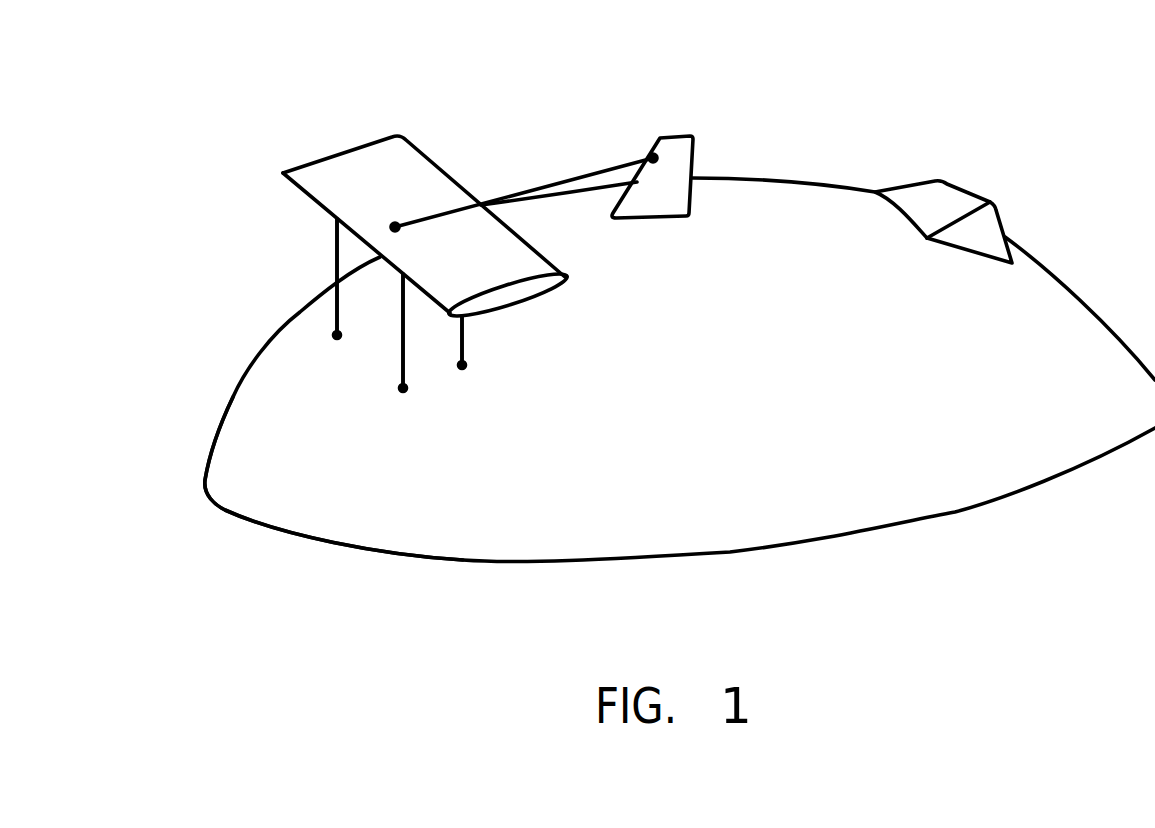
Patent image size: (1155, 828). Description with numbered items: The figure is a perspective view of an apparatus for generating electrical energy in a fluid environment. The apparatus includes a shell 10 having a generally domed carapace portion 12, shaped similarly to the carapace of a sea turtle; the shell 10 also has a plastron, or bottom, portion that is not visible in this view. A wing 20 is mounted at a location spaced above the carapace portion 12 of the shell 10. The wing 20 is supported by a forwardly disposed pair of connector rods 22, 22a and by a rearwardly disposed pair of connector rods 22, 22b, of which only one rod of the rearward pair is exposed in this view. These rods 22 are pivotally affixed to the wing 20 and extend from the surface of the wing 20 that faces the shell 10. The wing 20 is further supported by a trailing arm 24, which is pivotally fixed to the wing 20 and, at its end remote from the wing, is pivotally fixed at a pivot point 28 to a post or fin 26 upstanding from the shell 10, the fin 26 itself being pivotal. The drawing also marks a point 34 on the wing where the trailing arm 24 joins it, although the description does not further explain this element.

The shell 10 is at (255, 348).
The carapace portion 12 is at (225, 427).
The wing 20 is at (369, 148).
The connector rods 22 is at (399, 303).
The forwardly disposed connector rods 22a is at (403, 312).
The rearwardly disposed connector rods 22b is at (460, 356).
The trailing arm 24 is at (571, 176).
The post or fin 26 is at (690, 137).
The pivot point 28 is at (653, 158).
The boom pivot point 34 is at (395, 227).